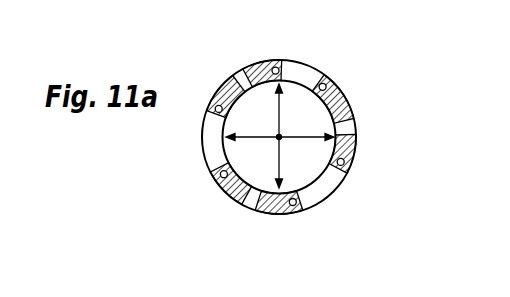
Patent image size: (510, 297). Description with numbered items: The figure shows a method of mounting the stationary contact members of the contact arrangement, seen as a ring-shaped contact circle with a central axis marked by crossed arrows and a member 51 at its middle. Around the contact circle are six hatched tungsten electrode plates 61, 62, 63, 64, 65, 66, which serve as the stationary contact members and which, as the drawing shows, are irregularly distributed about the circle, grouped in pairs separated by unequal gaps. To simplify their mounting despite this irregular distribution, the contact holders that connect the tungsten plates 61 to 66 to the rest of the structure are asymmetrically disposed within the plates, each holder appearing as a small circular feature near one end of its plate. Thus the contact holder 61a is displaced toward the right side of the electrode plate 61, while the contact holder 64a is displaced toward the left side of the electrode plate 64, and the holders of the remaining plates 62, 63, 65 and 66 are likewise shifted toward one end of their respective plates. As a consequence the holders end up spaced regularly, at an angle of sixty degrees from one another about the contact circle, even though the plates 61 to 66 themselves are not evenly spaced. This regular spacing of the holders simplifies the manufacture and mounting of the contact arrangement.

The rotor ring 51 is at (303, 140).
The tungsten plate 61 is at (263, 59).
The contact holder 61a is at (278, 57).
The tungsten plate 62 is at (347, 103).
The tungsten plate 63 is at (223, 192).
The tungsten plate 64 is at (210, 116).
The contact holder 64a is at (213, 108).
The tungsten plate 65 is at (355, 145).
The tungsten plate 66 is at (277, 214).